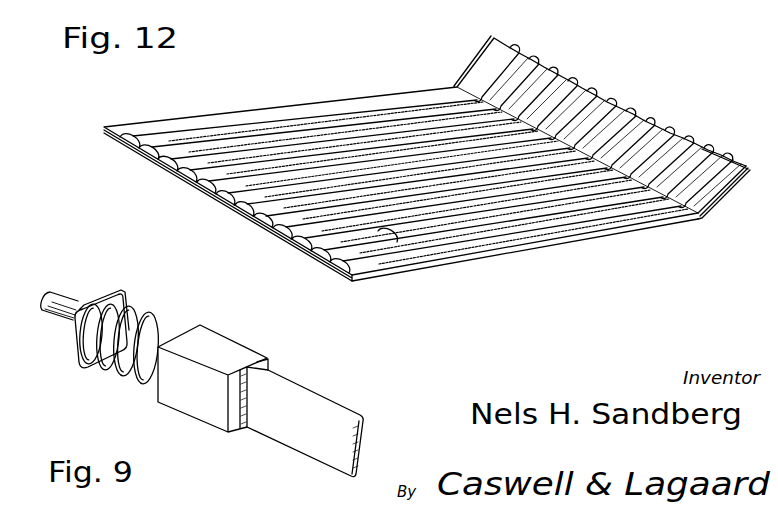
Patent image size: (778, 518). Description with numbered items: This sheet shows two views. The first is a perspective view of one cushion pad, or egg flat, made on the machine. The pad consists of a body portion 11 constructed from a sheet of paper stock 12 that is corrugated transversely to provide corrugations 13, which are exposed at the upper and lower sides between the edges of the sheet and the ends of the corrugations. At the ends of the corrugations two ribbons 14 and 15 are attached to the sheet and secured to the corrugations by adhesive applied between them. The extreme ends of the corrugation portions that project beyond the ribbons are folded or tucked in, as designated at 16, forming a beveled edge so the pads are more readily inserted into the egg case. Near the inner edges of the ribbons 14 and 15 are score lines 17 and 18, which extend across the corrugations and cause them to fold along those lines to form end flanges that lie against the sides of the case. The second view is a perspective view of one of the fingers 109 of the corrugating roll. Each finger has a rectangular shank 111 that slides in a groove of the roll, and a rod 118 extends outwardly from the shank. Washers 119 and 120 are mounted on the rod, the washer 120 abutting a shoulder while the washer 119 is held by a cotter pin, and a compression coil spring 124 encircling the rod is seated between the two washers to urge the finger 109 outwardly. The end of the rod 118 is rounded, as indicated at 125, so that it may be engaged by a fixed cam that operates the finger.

In FIG. 12, the body portion 11 is at (283, 106).
In FIG. 12, the sheet of paper stock 12 is at (373, 95).
In FIG. 12, the corrugations 13 is at (508, 223).
In FIG. 12, the ribbon 14 is at (378, 276).
In FIG. 12, the ribbon 15 is at (717, 198).
In FIG. 12, the folded or tucked-in ends 16 is at (633, 114).
In FIG. 12, the score line 17 is at (388, 235).
In FIG. 12, the score line 18 is at (625, 178).
In FIG. 9, the finger 109 is at (302, 433).
In FIG. 9, the rectangular shank 111 is at (230, 358).
In FIG. 9, the rod 118 is at (62, 312).
In FIG. 9, the washer 119 is at (78, 350).
In FIG. 9, the washer 120 is at (153, 380).
In FIG. 9, the compression coil spring 124 is at (147, 310).
In FIG. 9, the rounded end 125 is at (50, 291).